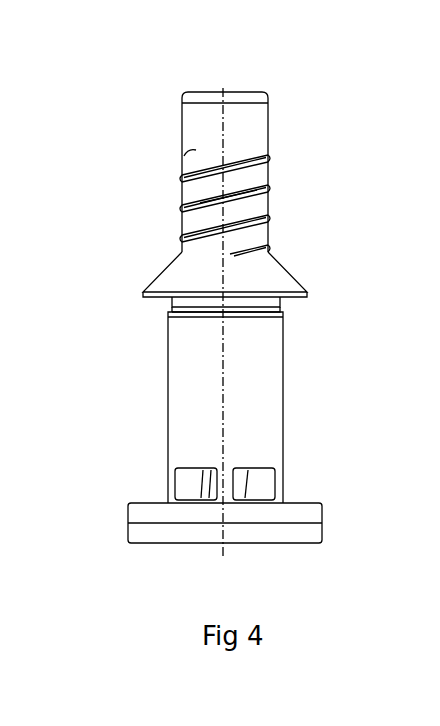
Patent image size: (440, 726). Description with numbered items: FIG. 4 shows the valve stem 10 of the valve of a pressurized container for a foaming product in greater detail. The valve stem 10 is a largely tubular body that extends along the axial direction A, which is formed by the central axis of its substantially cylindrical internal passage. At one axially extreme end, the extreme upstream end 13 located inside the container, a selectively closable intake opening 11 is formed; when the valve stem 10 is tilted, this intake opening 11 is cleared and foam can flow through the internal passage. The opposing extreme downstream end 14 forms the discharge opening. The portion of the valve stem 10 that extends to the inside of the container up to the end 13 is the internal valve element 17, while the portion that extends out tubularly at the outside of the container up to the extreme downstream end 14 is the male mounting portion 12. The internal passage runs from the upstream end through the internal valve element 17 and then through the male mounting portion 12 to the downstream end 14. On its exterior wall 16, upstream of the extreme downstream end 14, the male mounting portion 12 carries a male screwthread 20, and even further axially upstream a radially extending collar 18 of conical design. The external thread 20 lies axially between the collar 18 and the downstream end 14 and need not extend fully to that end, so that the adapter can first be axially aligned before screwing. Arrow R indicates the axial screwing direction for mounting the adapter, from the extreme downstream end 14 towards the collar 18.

The valve stem 10 is at (61, 101).
The intake opening 11 is at (258, 486).
The male mounting portion 12 is at (123, 102).
The extreme upstream end 13 is at (212, 569).
The extreme downstream end 14 is at (206, 83).
The exterior wall 16 is at (270, 160).
The internal valve element 17 is at (123, 343).
The collar 18 is at (277, 273).
The male screwthread 20 is at (257, 190).
The axial direction A is at (223, 121).
The screwing direction arrow R is at (160, 118).